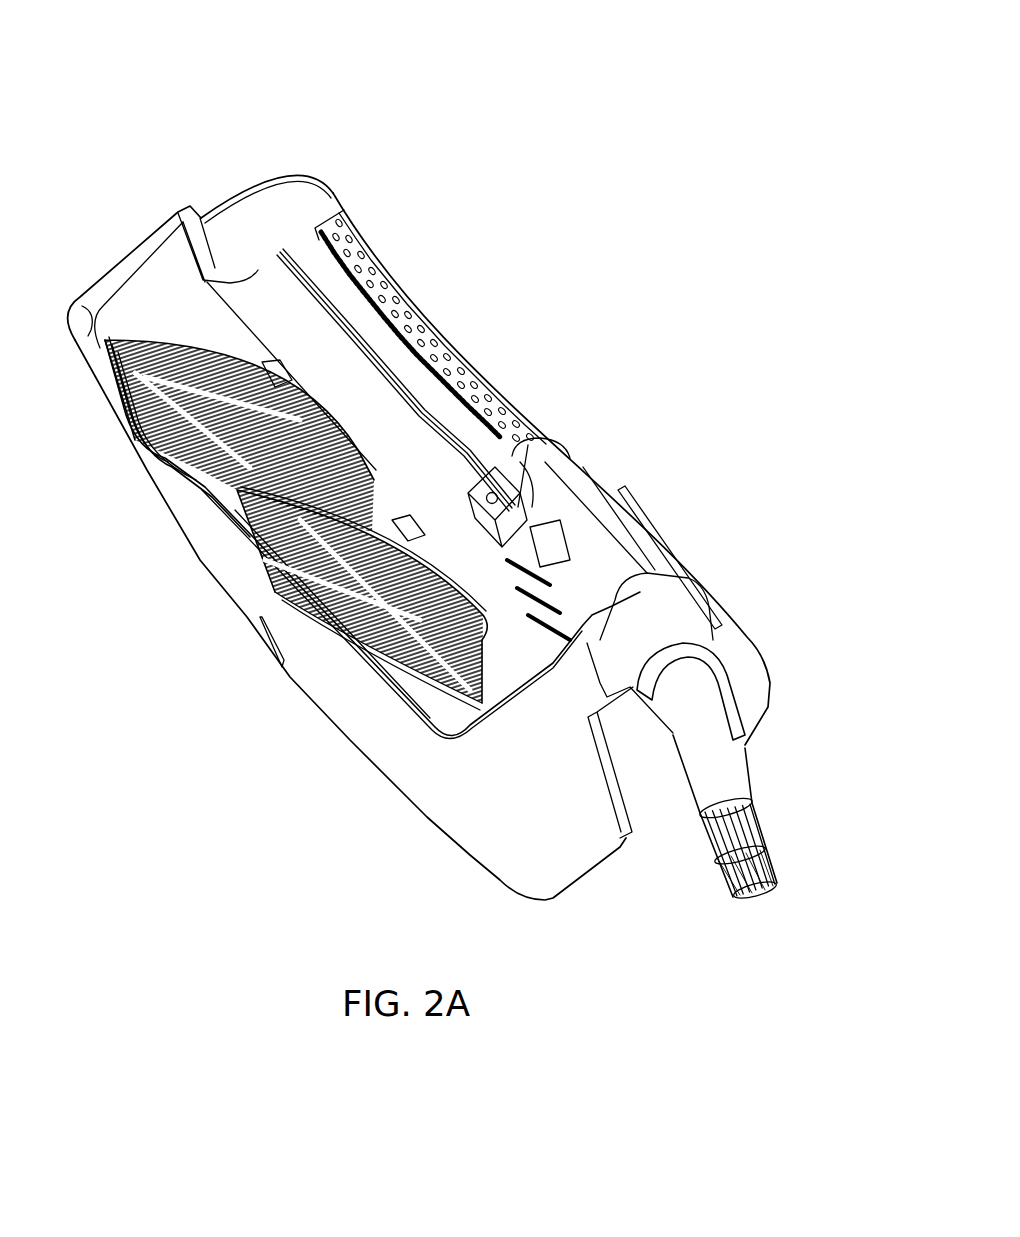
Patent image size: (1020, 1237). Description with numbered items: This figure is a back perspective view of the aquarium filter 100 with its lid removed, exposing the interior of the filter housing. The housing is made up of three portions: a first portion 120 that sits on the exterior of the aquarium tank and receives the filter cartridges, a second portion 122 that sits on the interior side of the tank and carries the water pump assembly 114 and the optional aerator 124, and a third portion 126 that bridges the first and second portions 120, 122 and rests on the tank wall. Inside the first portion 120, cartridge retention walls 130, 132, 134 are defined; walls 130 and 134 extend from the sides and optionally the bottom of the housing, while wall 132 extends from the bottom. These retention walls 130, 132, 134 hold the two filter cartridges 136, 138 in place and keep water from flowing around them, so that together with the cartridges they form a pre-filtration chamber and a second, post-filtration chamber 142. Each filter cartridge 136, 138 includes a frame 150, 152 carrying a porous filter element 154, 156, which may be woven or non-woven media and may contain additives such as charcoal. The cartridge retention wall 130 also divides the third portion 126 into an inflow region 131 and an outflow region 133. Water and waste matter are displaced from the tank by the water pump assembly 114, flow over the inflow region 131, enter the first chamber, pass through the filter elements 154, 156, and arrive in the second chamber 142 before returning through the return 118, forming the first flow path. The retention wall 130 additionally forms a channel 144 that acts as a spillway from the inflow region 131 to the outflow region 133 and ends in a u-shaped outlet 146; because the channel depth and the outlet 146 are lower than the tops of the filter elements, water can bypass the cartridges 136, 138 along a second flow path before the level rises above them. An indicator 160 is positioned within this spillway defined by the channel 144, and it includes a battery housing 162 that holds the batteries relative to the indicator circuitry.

The filter 100 is at (138, 117).
The water pump assembly 114 is at (814, 715).
The return 118 is at (418, 302).
The first portion 120 is at (426, 815).
The second portion 122 is at (718, 622).
The aerator 124 is at (352, 242).
The third portion 126 is at (593, 662).
The cartridge retention wall 130 is at (405, 702).
The inflow region 131 is at (617, 568).
The cartridge retention wall 132 is at (152, 458).
The outflow region 133 is at (203, 220).
The cartridge retention wall 134 is at (67, 308).
The filter cartridge 136 is at (235, 533).
The filter cartridge 138 is at (83, 355).
The second chamber 142 is at (374, 468).
The channel 144 is at (633, 505).
The u-shaped outlet 146 is at (552, 456).
The frame 150 is at (287, 593).
The frame 152 is at (103, 390).
The filter element 154 is at (312, 617).
The filter element 156 is at (133, 443).
The indicator 160 is at (510, 455).
The battery housing 162 is at (538, 506).